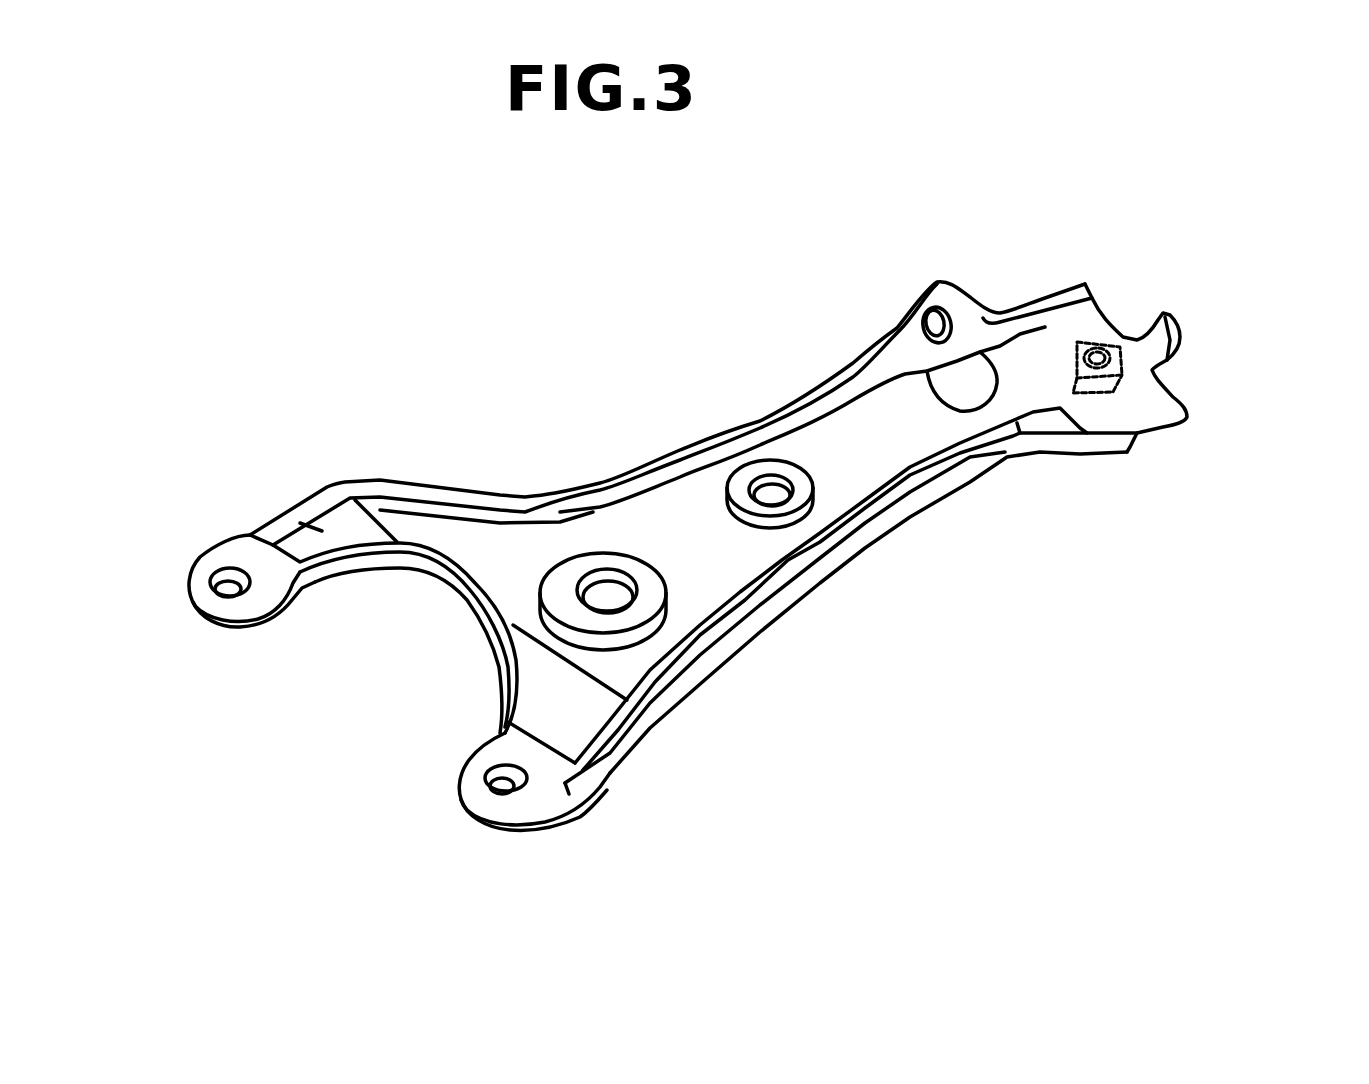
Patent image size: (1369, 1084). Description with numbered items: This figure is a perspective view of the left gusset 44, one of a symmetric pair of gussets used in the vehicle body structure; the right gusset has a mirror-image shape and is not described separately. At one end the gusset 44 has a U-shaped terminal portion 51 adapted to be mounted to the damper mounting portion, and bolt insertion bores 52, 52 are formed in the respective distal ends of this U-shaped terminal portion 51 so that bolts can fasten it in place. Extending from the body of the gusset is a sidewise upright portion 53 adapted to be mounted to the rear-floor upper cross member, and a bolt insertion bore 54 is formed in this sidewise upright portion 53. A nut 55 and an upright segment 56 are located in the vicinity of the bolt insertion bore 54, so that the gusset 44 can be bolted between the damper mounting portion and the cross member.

The left gusset 44 is at (725, 536).
The U-shaped terminal portion 51 is at (226, 540).
The bolt insertion bores 52 is at (235, 590).
The sidewise upright portion 53 is at (884, 323).
The bolt insertion bore 54 is at (940, 307).
The nut 55 is at (1097, 400).
The upright segment 56 is at (1183, 341).